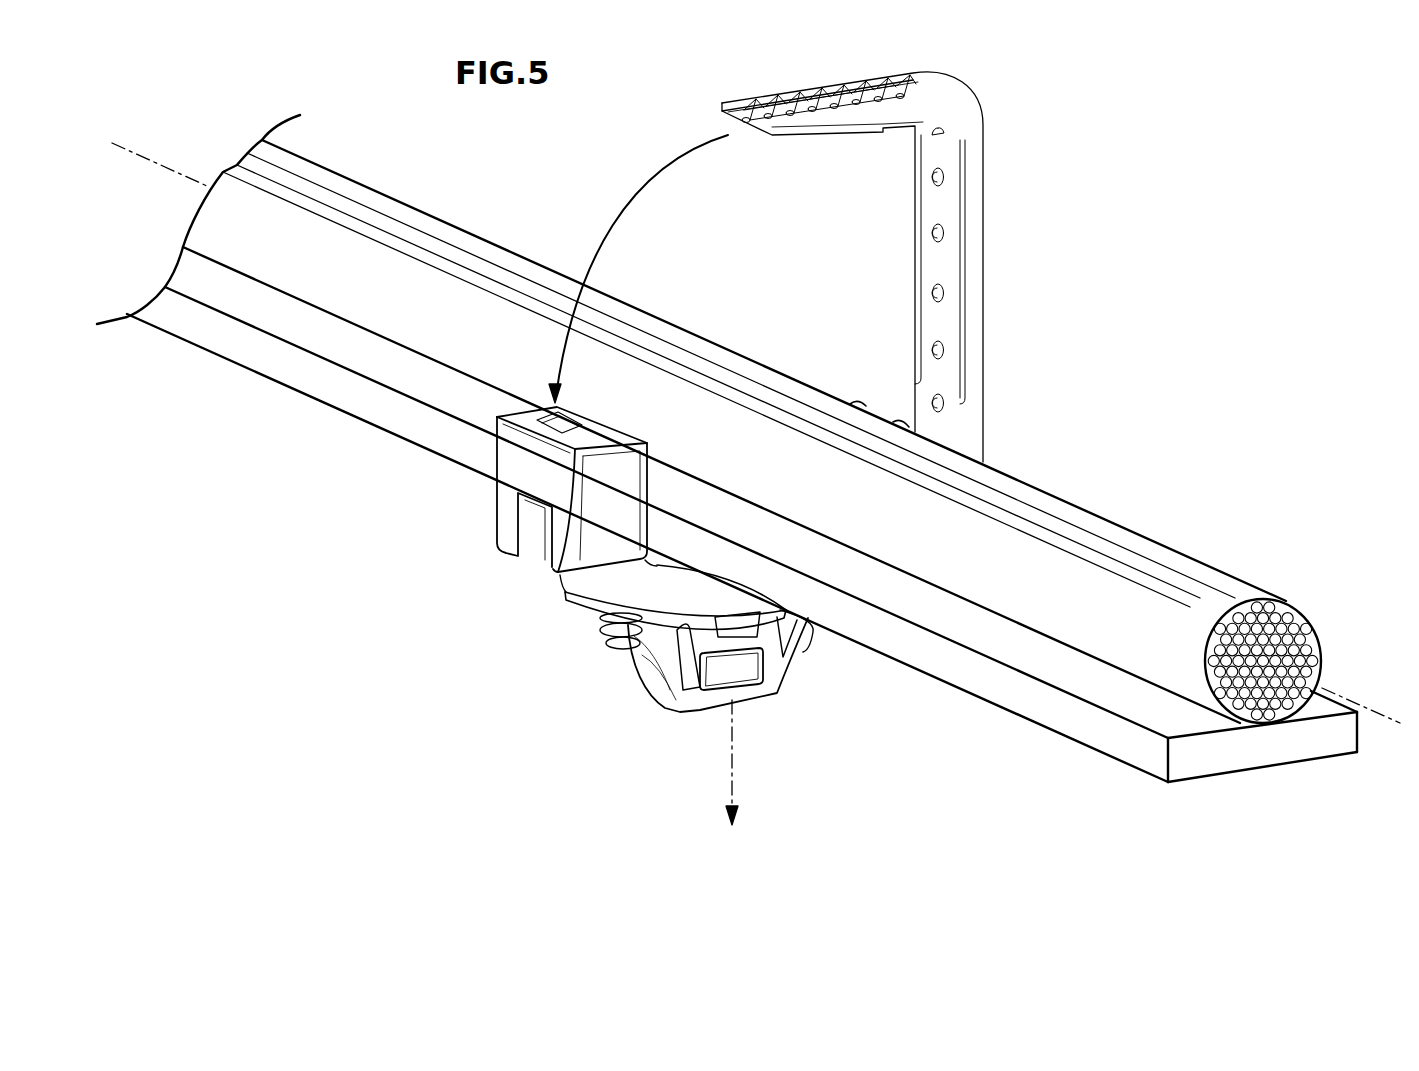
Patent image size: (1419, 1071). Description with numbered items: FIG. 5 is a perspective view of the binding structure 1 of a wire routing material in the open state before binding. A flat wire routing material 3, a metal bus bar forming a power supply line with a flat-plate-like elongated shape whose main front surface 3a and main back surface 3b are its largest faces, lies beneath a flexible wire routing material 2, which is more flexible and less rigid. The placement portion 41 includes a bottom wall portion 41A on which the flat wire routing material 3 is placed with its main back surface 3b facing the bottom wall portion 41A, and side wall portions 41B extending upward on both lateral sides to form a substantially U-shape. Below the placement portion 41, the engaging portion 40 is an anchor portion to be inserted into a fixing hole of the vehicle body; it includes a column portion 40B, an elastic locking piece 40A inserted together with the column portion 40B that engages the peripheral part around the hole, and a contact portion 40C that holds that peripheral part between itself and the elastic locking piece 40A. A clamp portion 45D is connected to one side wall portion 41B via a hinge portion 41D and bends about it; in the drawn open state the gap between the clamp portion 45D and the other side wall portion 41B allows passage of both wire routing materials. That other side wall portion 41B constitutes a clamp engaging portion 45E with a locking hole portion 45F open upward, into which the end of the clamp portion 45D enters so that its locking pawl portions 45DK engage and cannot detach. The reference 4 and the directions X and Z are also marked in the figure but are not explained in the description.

The binding structure 1 is at (632, 549).
The flexible wire routing material 2 is at (1152, 537).
The flat wire routing material 3 is at (742, 589).
The main front surface 3a is at (1140, 703).
The main back surface 3b is at (1118, 762).
The clamp 4 is at (632, 549).
The engaging portion 40 is at (691, 683).
The elastic locking piece 40A is at (603, 637).
The column portion 40B is at (735, 640).
The contact portion 40C is at (593, 599).
The placement portion 41 is at (630, 507).
The bottom wall portion 41A is at (665, 566).
The side wall portion 41B is at (515, 470).
The hinge portion 41D is at (870, 405).
The clamp portion 45D is at (912, 249).
The locking pawl portion 45DK is at (799, 85).
The clamp engaging portion 45E is at (499, 489).
The locking hole portion 45F is at (580, 440).
The X axis direction X is at (1353, 695).
The Z axis direction Z is at (735, 778).